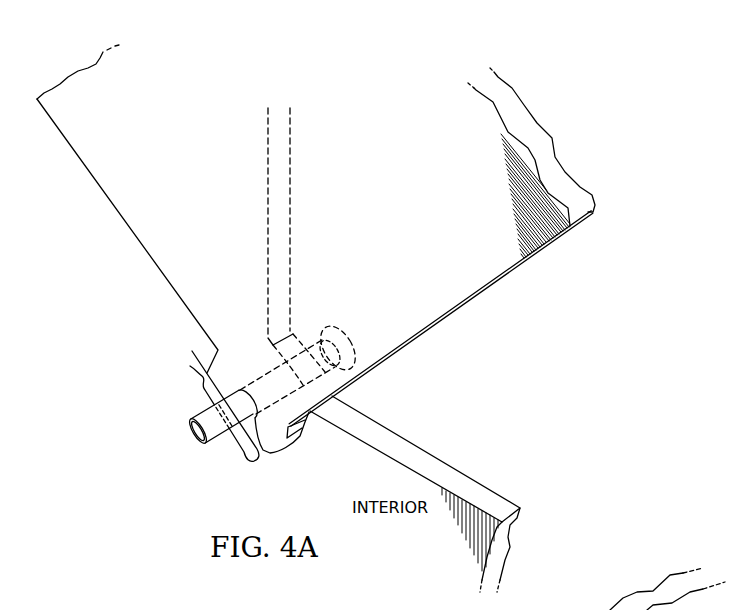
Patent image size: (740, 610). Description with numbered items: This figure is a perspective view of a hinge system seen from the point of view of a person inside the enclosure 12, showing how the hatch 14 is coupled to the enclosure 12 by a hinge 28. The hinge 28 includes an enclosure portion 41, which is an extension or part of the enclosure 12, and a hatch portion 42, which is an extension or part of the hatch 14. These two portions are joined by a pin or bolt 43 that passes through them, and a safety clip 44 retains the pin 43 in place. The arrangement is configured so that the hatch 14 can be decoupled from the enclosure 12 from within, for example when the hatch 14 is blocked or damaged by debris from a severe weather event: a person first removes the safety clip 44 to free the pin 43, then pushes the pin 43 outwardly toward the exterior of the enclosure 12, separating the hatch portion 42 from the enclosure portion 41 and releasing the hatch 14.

The enclosure 12 is at (463, 472).
The hatch 14 is at (480, 293).
The hinge 28 is at (140, 372).
The enclosure portion 41 is at (302, 337).
The hatch portion 42 is at (297, 440).
The pin 43 is at (195, 440).
The safety clip 44 is at (196, 387).